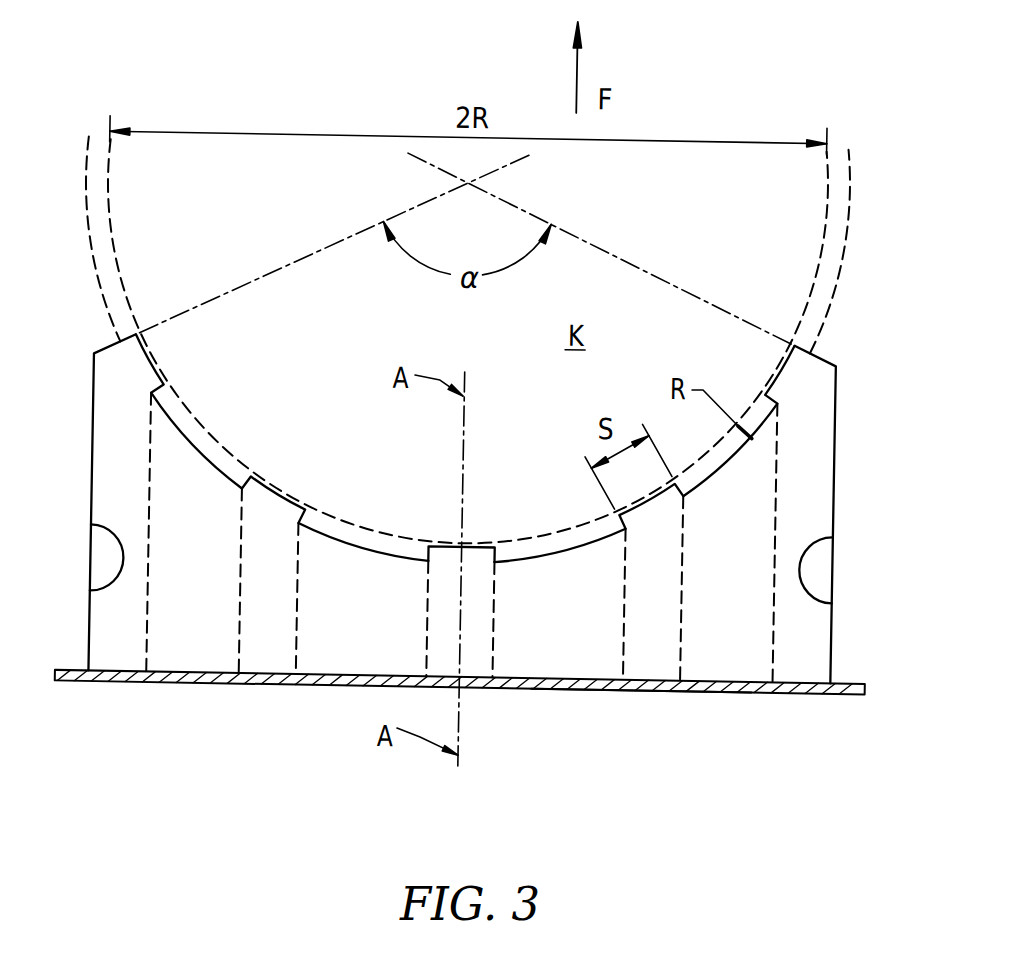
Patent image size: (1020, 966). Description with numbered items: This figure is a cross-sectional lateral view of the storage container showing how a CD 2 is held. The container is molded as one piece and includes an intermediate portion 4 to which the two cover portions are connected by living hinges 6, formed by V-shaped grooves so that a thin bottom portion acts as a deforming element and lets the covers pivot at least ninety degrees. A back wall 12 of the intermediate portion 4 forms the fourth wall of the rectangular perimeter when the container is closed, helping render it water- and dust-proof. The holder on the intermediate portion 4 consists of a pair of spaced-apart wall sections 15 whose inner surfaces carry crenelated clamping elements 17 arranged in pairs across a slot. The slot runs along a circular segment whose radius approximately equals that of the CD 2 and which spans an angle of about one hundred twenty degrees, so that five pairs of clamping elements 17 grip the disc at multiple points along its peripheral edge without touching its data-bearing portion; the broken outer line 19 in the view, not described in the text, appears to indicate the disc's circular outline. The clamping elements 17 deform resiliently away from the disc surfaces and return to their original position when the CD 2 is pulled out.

The CD 2 is at (706, 221).
The intermediate portion 4 is at (820, 464).
The living hinges 6 is at (473, 658).
The back wall 12 is at (640, 727).
The wall sections 15 is at (147, 543).
The clamping elements 17 is at (460, 504).
The outer envelope circle 19 is at (505, 245).